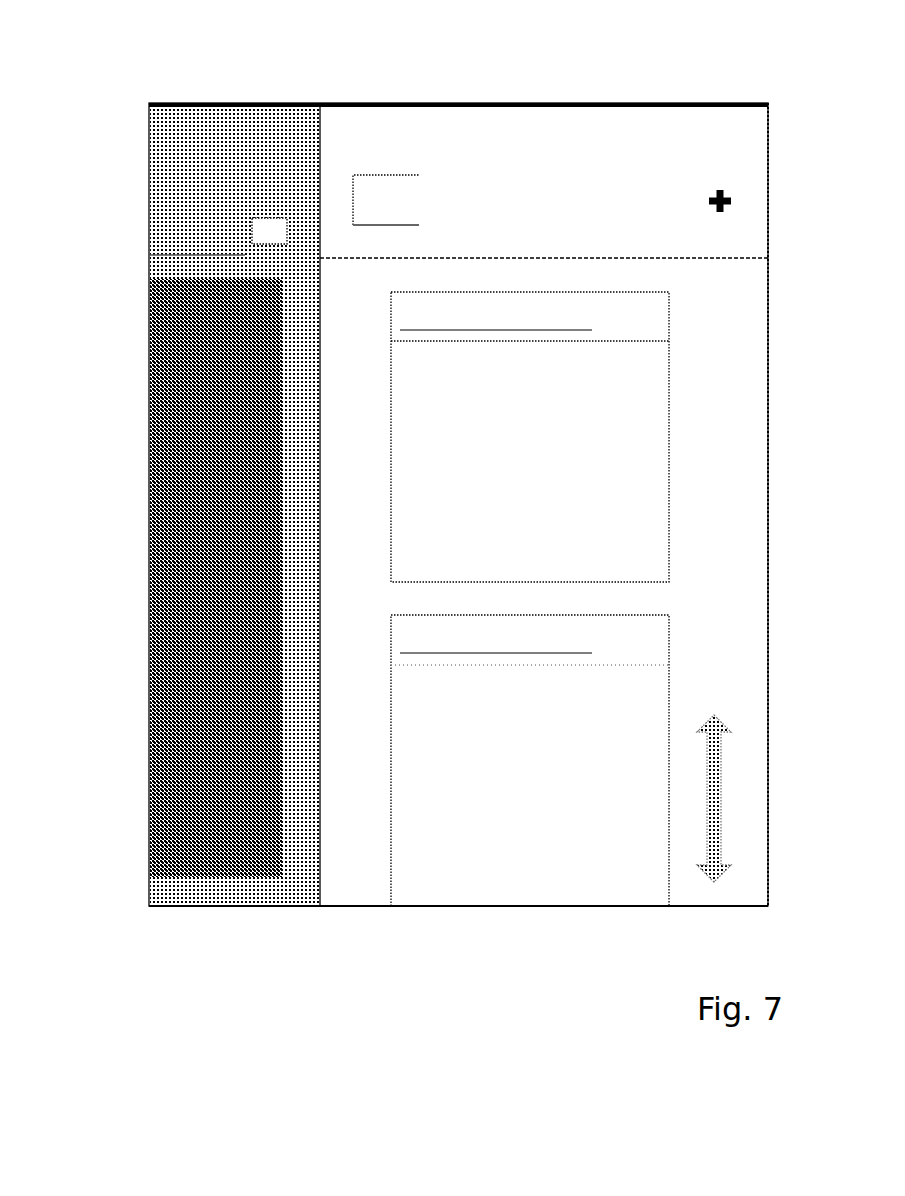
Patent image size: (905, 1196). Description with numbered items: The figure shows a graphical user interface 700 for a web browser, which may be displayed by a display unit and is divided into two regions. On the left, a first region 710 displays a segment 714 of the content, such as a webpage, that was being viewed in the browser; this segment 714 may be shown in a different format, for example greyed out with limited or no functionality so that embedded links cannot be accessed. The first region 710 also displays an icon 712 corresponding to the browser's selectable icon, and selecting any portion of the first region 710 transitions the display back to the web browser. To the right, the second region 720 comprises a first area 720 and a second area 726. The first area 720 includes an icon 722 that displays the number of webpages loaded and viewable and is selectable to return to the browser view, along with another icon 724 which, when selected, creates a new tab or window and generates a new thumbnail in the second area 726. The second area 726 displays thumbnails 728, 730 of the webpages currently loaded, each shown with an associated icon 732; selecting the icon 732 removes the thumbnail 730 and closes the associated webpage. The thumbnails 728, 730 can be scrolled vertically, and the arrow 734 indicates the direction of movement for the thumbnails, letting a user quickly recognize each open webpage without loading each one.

The graphical user interface 700 is at (134, 86).
The first region 710 is at (232, 158).
The icon 712 is at (240, 225).
The segment of the content 714 is at (208, 500).
The second region 720 is at (680, 138).
The icon 722 is at (390, 165).
The icon 724 is at (745, 200).
The second area 726 is at (716, 325).
The thumbnail 728 is at (530, 461).
The thumbnail 730 is at (530, 785).
The icon 732 is at (660, 645).
The arrow 734 is at (733, 790).